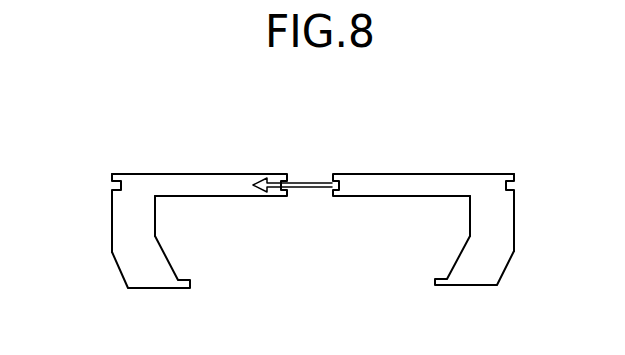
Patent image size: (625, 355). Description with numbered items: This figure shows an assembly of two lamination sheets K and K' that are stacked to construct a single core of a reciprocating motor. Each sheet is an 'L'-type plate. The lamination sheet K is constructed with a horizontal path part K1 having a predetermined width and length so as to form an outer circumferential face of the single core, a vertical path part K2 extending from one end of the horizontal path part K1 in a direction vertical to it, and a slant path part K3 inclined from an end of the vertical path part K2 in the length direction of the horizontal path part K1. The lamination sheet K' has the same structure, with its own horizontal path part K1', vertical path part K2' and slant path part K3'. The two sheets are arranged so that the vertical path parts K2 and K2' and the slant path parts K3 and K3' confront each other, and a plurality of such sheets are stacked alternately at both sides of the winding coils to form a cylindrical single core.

The lamination sheet K is at (458, 196).
The horizontal path part K1 is at (423, 156).
The vertical path part K2 is at (522, 212).
The slant path part K3 is at (505, 260).
The lamination sheet K' is at (165, 200).
The horizontal path part K1' is at (199, 156).
The vertical path part K2' is at (101, 213).
The slant path part K3' is at (119, 263).